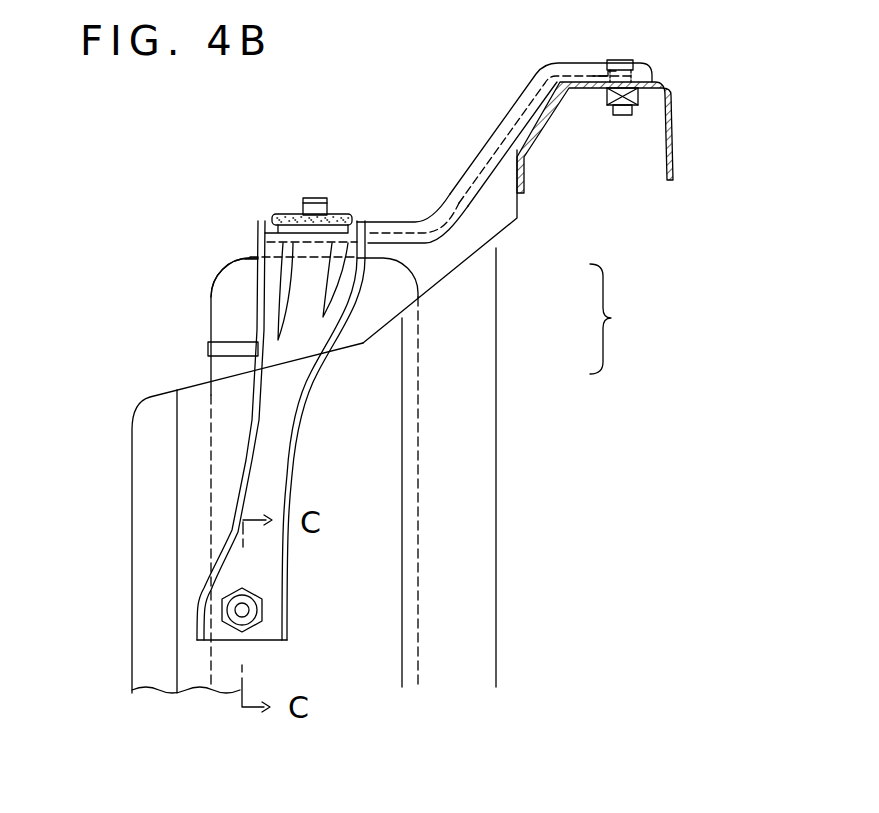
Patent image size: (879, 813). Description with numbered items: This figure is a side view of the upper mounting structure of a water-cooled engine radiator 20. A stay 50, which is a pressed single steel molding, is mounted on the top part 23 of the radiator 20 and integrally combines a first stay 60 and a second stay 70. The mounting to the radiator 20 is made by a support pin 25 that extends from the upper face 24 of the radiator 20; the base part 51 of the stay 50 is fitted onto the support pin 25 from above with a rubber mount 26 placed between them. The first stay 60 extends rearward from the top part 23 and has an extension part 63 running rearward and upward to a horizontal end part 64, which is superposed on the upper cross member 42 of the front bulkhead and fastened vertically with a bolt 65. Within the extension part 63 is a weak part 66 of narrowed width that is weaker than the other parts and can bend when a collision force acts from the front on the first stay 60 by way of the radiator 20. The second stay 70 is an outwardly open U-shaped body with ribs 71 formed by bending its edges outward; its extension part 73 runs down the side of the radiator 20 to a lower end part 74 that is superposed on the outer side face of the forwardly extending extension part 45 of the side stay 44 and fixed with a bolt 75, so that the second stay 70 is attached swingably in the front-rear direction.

The radiator 20 is at (190, 304).
The top part of the radiator 23 is at (220, 270).
The upper face of the radiator 24 is at (247, 257).
The support pin 25 is at (313, 198).
The rubber mount 26 is at (290, 213).
The upper cross member 42 is at (673, 157).
The side stay 44 is at (477, 507).
The extension part of the side stay 45 is at (140, 523).
The stay 50 is at (624, 319).
The base part of the stay 51 is at (263, 213).
The first stay 60 is at (531, 154).
The extension part of the first stay 63 is at (397, 218).
The end part of the first stay 64 is at (588, 76).
The bolt 65 is at (627, 56).
The weak part 66 is at (460, 180).
The second stay 70 is at (331, 433).
The ribs of the second stay 71 is at (280, 429).
The extension part of the second stay 73 is at (273, 453).
The end part of the second stay 74 is at (270, 588).
The bolt 75 is at (250, 611).